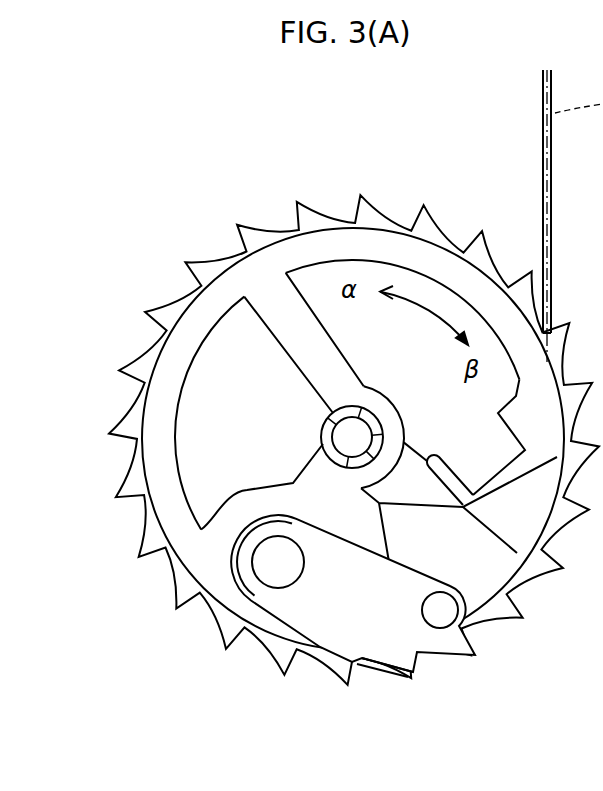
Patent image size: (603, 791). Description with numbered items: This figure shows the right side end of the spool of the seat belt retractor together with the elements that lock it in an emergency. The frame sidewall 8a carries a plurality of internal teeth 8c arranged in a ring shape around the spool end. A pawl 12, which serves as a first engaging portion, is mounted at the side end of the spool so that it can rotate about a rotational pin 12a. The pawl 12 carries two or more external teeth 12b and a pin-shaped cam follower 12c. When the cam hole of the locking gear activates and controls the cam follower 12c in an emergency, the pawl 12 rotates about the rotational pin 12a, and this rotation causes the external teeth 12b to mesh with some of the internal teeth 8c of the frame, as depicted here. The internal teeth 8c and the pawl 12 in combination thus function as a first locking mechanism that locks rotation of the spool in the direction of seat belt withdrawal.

The left sidewall 8a is at (78, 283).
The internal teeth 8c is at (342, 198).
The pawl 12 is at (341, 640).
The rotational pin 12a is at (262, 560).
The external teeth 12b is at (463, 657).
The cam follower 12c is at (470, 622).